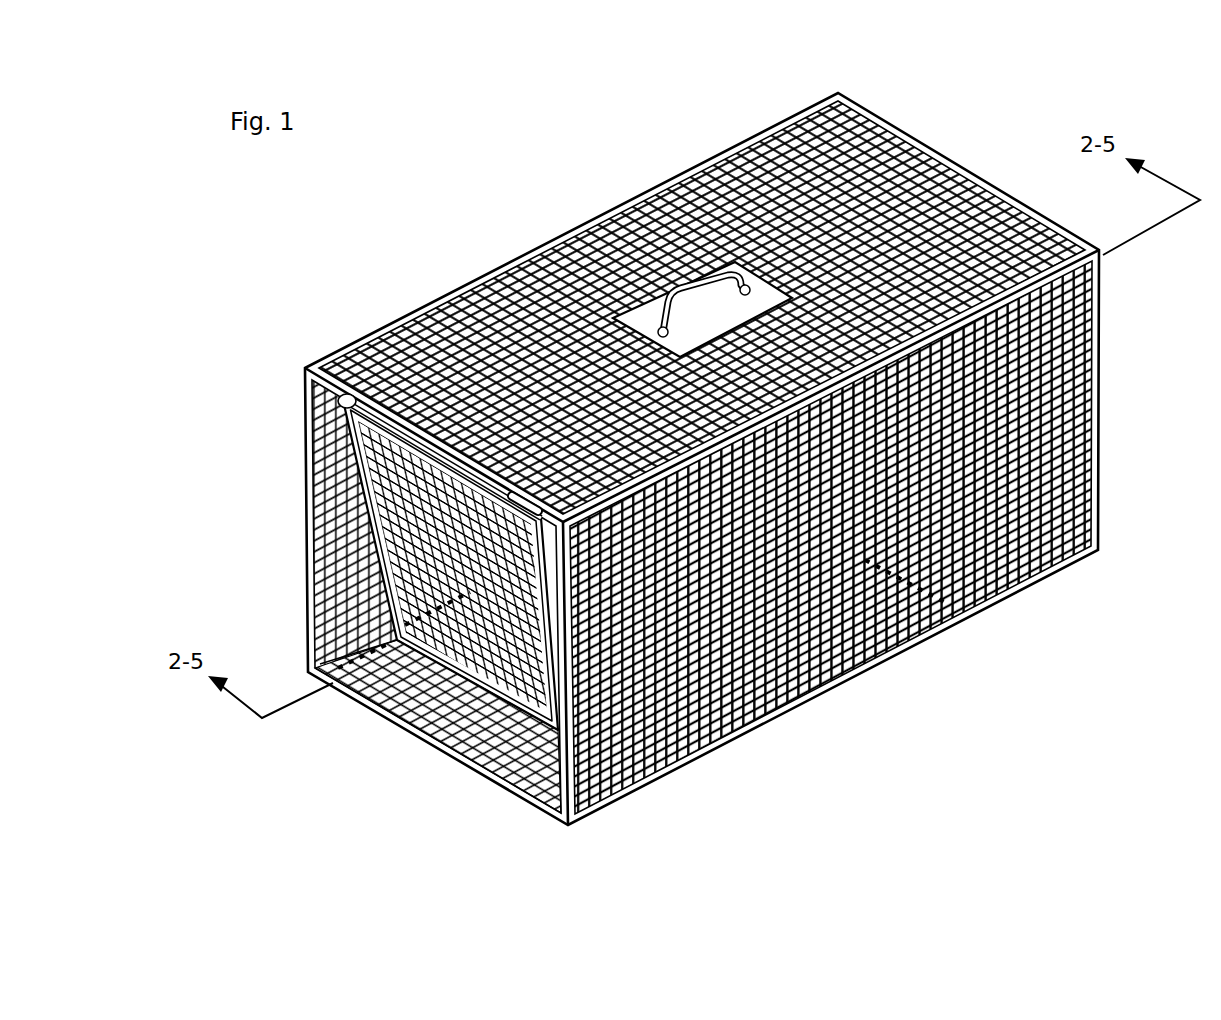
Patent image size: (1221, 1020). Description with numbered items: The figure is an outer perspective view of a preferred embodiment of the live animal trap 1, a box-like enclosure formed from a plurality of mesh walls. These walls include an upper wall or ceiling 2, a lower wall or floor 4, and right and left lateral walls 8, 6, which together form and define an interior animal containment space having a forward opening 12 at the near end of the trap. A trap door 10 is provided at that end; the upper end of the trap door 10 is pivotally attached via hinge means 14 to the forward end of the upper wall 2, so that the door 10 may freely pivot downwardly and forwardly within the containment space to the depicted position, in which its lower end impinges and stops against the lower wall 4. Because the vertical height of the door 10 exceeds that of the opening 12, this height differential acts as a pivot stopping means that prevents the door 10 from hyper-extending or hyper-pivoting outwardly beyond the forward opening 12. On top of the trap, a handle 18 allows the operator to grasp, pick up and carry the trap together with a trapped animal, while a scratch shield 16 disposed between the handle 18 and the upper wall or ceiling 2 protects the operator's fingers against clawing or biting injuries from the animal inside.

The live animal trap 1 is at (662, 122).
The upper wall or ceiling 2 is at (890, 193).
The lower wall or floor 4 is at (513, 753).
The lateral wall 6 is at (810, 637).
The lateral wall 8 is at (309, 470).
The trap door 10 is at (397, 532).
The forward opening 12 is at (397, 668).
The hinge means 14 is at (350, 400).
The scratch shield 16 is at (765, 293).
The handle 18 is at (667, 283).